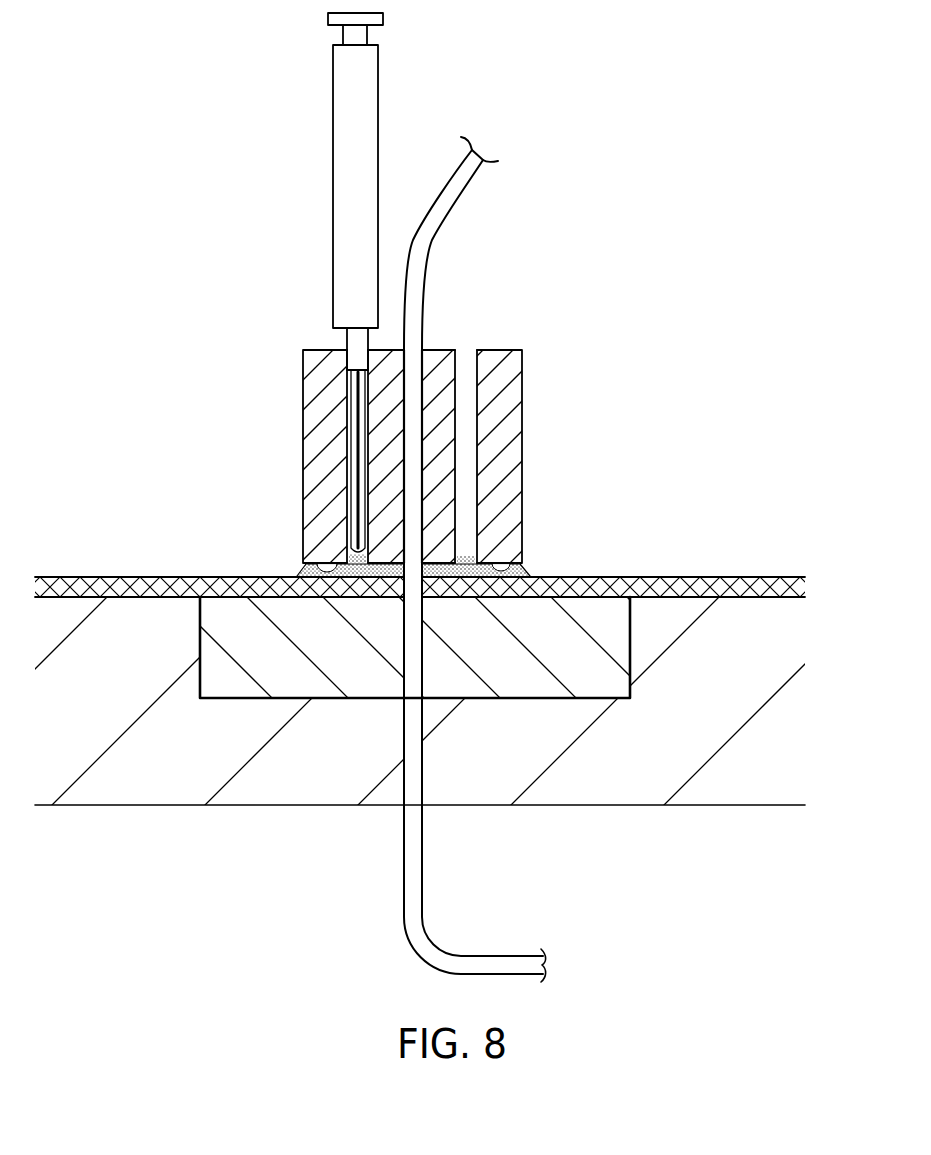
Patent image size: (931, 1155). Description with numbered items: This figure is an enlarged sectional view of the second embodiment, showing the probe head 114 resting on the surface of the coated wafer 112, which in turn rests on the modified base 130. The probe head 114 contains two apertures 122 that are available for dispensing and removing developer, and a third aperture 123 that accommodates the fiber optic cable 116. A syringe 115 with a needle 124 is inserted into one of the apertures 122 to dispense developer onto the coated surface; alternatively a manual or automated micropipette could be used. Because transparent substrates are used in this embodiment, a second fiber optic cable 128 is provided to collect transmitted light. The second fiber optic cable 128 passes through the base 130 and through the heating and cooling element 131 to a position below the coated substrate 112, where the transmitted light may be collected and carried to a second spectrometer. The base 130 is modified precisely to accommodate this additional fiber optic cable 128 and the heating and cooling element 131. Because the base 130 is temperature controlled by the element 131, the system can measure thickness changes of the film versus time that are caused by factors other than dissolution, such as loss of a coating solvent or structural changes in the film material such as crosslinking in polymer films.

The coated wafer 112 is at (652, 577).
The probe head 114 is at (522, 403).
The syringe 115 is at (335, 177).
The fiber optic cable 116 is at (428, 248).
The apertures 122 is at (345, 470).
The third aperture 123 is at (422, 372).
The needle 124 is at (345, 408).
The second fiber optic cable 128 is at (407, 886).
The modified base 130 is at (557, 806).
The heating and cooling element 131 is at (569, 643).